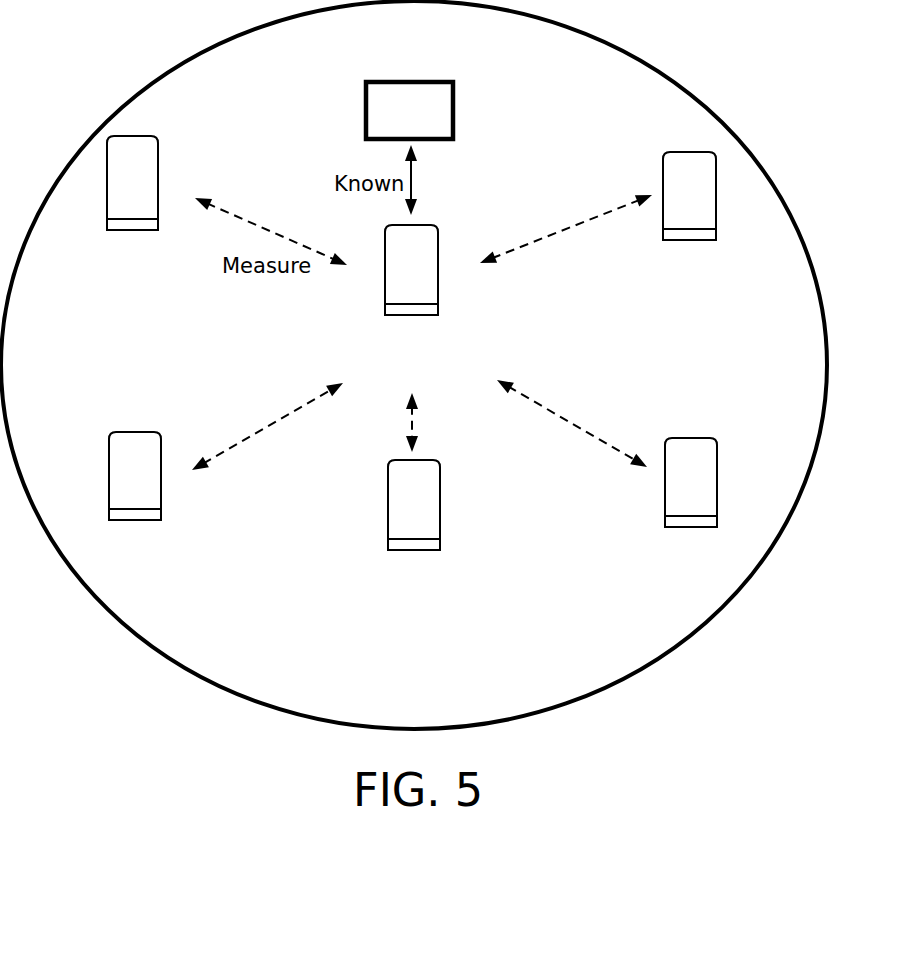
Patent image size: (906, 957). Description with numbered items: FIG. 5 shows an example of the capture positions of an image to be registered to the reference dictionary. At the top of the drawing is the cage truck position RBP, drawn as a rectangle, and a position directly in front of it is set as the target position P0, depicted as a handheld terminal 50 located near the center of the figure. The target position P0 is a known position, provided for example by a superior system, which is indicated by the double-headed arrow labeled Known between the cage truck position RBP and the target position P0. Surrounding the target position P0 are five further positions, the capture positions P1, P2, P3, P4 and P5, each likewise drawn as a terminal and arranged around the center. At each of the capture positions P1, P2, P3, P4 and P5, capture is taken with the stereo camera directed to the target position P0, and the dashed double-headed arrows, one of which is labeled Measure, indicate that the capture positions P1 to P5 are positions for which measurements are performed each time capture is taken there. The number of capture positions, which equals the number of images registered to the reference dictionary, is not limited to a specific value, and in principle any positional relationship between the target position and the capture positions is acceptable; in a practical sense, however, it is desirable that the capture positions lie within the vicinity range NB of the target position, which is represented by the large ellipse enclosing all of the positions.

The mobile terminal (P0) 50 is at (438, 240).
The vicinity range NB is at (690, 637).
The cage truck position RBP is at (409, 95).
The target position P0 is at (411, 342).
The capture position P1 is at (132, 200).
The capture position P2 is at (135, 494).
The capture position P3 is at (414, 523).
The capture position P4 is at (691, 502).
The capture position P5 is at (689, 216).